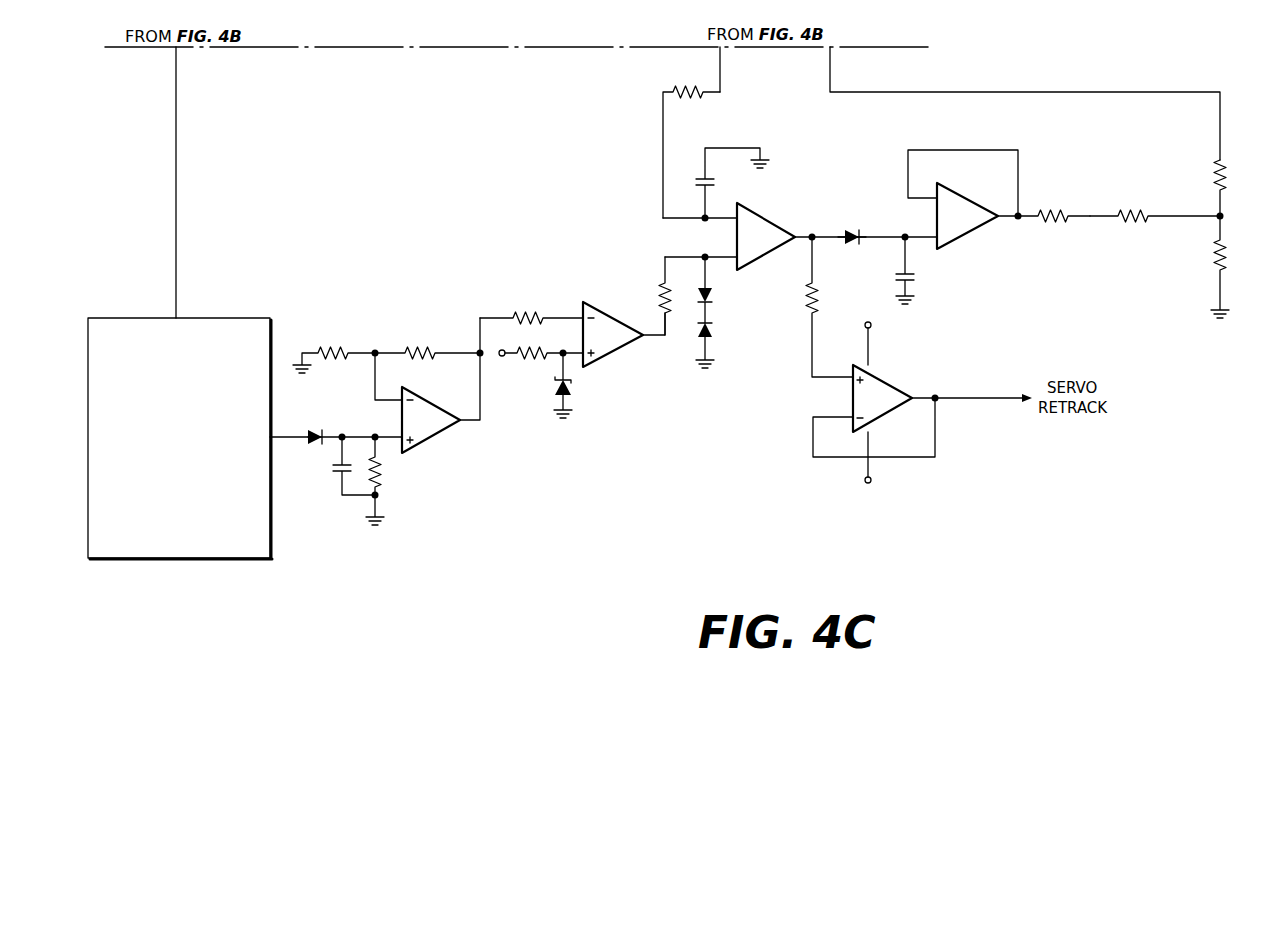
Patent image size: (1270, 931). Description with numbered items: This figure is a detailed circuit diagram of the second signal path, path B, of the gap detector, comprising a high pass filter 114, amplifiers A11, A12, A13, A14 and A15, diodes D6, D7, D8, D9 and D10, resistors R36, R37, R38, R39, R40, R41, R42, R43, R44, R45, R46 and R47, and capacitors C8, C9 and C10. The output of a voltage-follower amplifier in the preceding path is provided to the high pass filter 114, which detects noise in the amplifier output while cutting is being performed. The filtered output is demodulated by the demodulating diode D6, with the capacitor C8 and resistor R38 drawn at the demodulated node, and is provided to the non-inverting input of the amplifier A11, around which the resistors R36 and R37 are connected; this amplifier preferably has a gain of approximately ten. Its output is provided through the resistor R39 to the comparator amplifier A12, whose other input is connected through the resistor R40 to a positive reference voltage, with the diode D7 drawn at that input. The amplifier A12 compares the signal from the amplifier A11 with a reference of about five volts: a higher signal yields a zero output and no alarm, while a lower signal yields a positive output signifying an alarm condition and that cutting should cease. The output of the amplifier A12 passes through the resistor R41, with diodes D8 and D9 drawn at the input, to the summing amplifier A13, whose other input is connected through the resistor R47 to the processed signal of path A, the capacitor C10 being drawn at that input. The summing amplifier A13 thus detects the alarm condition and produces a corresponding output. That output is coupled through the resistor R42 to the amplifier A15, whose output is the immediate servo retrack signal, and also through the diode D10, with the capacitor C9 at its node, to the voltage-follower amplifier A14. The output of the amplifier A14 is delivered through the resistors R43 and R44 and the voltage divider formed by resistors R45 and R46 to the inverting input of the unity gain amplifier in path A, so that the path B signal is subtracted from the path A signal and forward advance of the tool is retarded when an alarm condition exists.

The high pass filter 114 is at (168, 479).
The demodulating diode D6 is at (323, 426).
The capacitor C8 is at (341, 466).
The resistor R38 is at (390, 481).
The resistor R36 is at (334, 349).
The resistor R37 is at (427, 342).
The amplifier A11 is at (436, 429).
The resistor R39 is at (531, 307).
The resistor R40 is at (541, 364).
The diode D7 is at (576, 385).
The comparator amplifier A12 is at (618, 345).
The resistor R41 is at (649, 296).
The diode D8 is at (717, 290).
The diode D9 is at (716, 345).
The summing amplifier A13 is at (771, 246).
The capacitor C10 is at (718, 183).
The resistor R47 is at (691, 140).
The diode D10 is at (854, 225).
The capacitor C9 is at (916, 270).
The amplifier A14 is at (971, 225).
The resistor R43 is at (1054, 205).
The resistor R44 is at (1155, 205).
The voltage-divider resistor R46 is at (1237, 188).
The voltage-divider resistor R45 is at (1235, 267).
The resistor R42 is at (813, 307).
The amplifier A15 is at (888, 408).